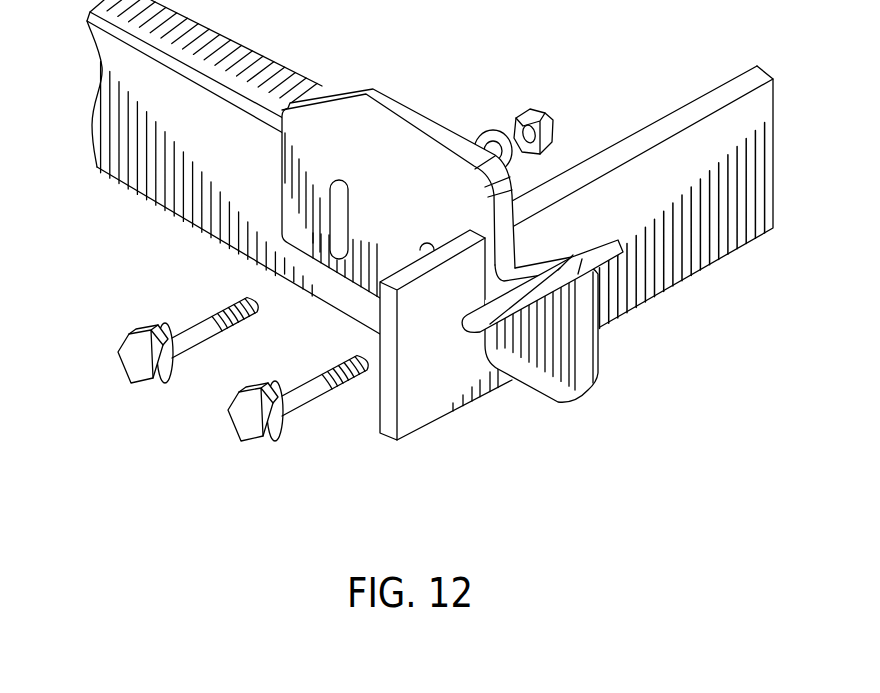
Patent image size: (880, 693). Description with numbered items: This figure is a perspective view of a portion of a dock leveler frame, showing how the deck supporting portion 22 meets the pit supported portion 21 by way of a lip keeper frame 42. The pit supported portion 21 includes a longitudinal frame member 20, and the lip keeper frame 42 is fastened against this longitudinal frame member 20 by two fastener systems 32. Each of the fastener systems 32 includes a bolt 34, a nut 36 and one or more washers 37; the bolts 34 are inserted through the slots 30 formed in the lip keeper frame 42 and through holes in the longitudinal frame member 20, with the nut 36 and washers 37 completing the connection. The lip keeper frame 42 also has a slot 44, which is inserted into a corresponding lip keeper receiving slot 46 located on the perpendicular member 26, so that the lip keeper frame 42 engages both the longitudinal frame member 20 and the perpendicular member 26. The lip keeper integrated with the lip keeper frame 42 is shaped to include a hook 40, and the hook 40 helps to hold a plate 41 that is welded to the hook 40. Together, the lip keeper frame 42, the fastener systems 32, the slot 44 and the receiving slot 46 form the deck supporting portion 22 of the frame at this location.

The longitudinal frame member 20 is at (228, 167).
The pit supported portion 21 is at (192, 215).
The deck supporting portion 22 is at (608, 356).
The perpendicular member 26 is at (641, 185).
The slots 30 is at (350, 207).
The fastener systems 32 is at (159, 424).
The bolt 34 is at (190, 325).
The nut 36 is at (536, 110).
The washers 37 is at (484, 130).
The hook 40 is at (565, 270).
The plate 41 is at (500, 325).
The lip keeper frame 42 is at (449, 160).
The slot 44 is at (495, 270).
The lip keeper receiving slot 46 is at (495, 270).